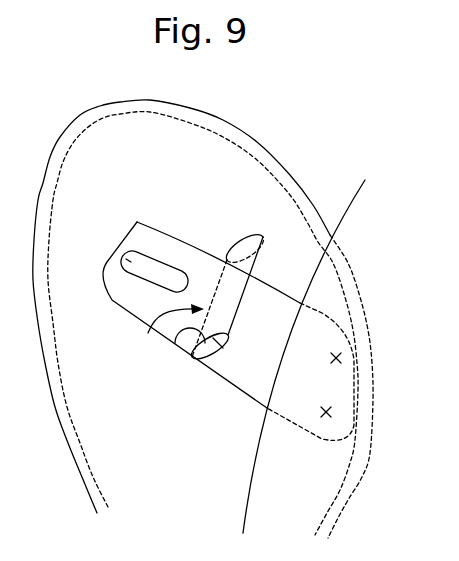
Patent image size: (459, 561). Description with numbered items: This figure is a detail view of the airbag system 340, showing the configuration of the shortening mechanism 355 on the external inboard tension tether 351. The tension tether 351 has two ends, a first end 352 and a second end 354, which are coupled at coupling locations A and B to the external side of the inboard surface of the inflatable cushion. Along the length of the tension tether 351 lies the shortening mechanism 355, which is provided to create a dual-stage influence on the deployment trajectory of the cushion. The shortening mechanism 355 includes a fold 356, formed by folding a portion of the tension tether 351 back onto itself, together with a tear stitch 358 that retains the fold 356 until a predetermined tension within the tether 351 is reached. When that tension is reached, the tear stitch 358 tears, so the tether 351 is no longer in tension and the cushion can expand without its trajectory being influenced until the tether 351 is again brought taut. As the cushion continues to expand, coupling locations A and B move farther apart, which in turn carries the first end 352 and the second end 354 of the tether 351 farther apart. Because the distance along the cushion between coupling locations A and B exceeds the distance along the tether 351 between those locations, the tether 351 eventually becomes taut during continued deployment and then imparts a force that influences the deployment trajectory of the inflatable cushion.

The airbag system 340 is at (300, 147).
The tension tether 351 is at (272, 307).
The first end 352 is at (151, 263).
The second end 354 is at (340, 383).
The shortening mechanism 355 is at (148, 333).
The fold 356 is at (215, 361).
The tear stitch 358 is at (175, 343).
The coupling location A is at (332, 413).
The coupling location B is at (128, 262).